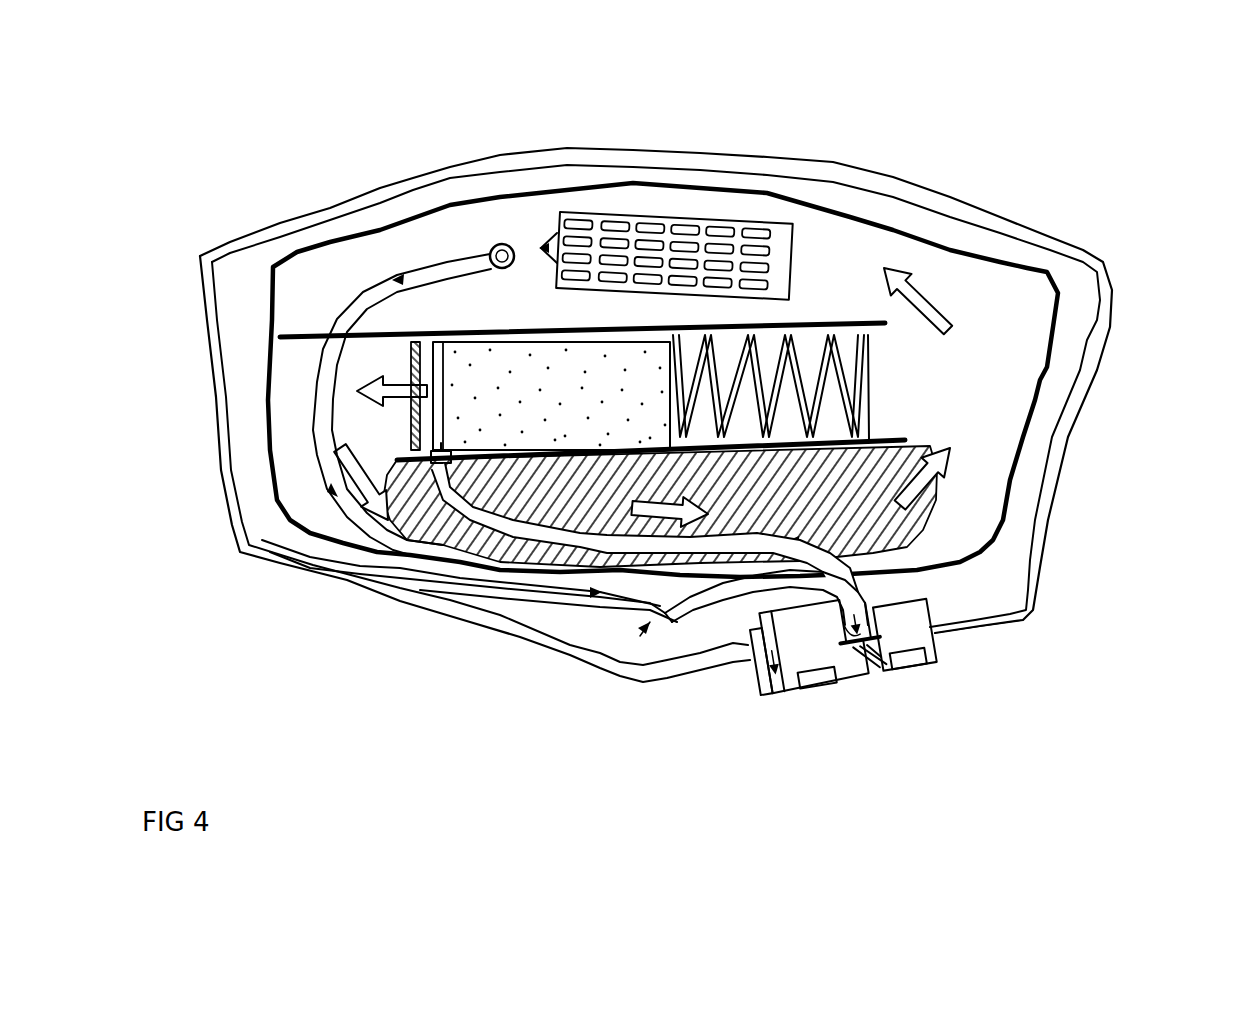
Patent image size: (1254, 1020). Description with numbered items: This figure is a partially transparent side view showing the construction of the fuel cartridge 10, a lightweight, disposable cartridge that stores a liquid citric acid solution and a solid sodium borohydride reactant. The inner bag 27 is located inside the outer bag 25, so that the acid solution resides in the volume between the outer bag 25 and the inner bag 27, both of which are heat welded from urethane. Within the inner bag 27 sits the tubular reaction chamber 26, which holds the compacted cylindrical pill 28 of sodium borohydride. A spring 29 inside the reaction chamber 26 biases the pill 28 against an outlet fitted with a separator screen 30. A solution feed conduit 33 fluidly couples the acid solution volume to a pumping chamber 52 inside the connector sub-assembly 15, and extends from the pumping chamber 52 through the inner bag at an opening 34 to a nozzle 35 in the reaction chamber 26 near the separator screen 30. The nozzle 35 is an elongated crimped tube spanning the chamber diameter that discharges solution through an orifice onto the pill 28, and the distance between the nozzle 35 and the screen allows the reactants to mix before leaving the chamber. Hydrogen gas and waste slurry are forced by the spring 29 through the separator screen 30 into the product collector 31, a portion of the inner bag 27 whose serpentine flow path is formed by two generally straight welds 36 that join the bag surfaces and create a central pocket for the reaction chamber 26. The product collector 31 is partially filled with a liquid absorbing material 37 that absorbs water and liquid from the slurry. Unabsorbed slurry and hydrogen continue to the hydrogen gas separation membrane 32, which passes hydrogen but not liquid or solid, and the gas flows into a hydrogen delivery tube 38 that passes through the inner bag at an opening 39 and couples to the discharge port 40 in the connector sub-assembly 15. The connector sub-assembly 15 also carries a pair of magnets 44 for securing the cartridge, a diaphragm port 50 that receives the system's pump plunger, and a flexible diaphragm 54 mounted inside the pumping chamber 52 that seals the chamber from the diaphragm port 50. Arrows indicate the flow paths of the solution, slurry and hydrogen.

The fuel cartridge 10 is at (1113, 327).
The connector sub-assembly 15 is at (932, 633).
The outer bag 25 is at (272, 530).
The reaction chamber 26 is at (420, 337).
The inner bag 27 is at (272, 460).
The pill 28 is at (517, 370).
The spring 29 is at (795, 363).
The separator screen 30 is at (412, 432).
The product collector 31 is at (997, 432).
The hydrogen gas separation membrane 32 is at (733, 215).
The solution feed conduit 33 is at (670, 618).
The opening 34 is at (1023, 618).
The nozzle 35 is at (427, 462).
The welds 36 is at (633, 328).
The liquid absorbing material 37 is at (447, 458).
The hydrogen delivery tube 38 is at (513, 597).
The opening 39 is at (507, 243).
The discharge port 40 is at (780, 690).
The magnets 44 is at (823, 686).
The diaphragm port 50 is at (856, 662).
The pumping chamber 52 is at (866, 668).
The flexible diaphragm 54 is at (880, 667).